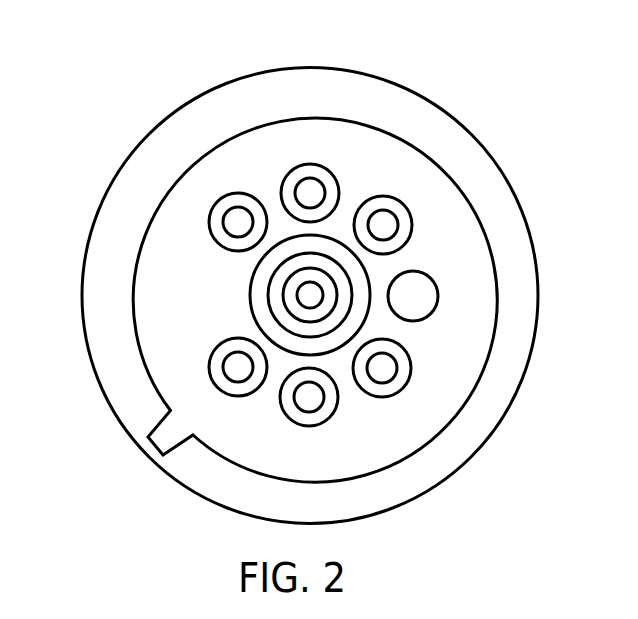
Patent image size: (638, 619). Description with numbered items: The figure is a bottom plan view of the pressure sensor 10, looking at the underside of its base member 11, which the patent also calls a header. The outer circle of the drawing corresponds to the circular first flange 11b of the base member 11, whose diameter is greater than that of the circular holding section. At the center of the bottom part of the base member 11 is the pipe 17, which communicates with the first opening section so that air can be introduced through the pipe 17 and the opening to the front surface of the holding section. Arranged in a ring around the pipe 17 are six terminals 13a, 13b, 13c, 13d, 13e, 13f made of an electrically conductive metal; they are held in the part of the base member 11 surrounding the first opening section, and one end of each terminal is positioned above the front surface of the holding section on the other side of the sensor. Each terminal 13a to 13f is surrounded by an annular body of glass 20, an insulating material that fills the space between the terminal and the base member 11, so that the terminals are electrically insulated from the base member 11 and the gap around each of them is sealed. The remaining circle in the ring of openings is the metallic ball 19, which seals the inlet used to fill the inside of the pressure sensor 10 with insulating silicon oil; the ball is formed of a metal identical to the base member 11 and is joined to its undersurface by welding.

The pressure sensor 10 is at (456, 81).
The base member 11 is at (444, 159).
The first flange 11b is at (157, 309).
The terminal 13a is at (237, 370).
The terminal 13b is at (310, 398).
The terminal 13c is at (382, 370).
The terminal 13d is at (382, 222).
The terminal 13e is at (309, 190).
The terminal 13f is at (237, 218).
The pipe 17 is at (282, 293).
The metallic ball 19 is at (417, 288).
The glass 20 is at (217, 223).